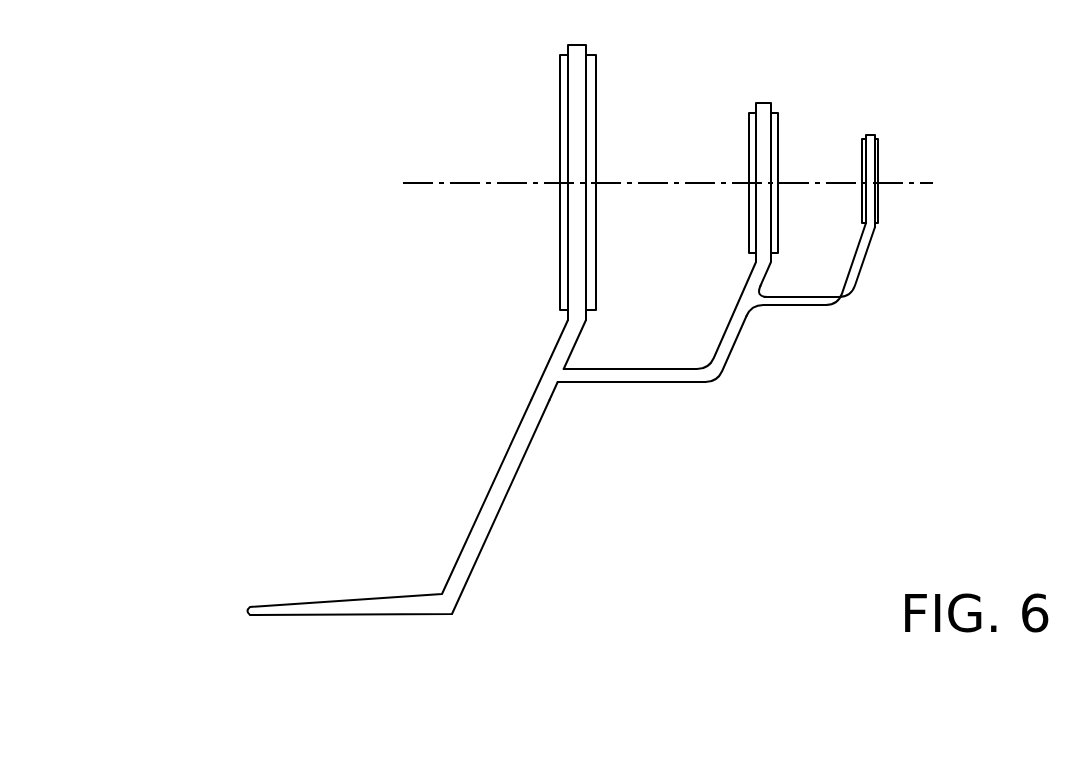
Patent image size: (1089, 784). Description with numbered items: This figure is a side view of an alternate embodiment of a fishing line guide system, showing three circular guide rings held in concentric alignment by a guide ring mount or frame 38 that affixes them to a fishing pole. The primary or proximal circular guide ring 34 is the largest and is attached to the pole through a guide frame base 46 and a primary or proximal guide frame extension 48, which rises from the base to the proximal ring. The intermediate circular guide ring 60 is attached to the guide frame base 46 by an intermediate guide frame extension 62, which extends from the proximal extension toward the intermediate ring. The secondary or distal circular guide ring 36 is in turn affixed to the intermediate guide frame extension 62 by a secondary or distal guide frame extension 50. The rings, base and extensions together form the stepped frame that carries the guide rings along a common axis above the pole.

The primary or proximal circular guide ring 34 is at (566, 103).
The secondary or distal circular guide ring 36 is at (878, 162).
The guide ring mount or frame 38 is at (318, 320).
The guide frame base 46 is at (482, 508).
The primary or proximal guide frame extension 48 is at (555, 348).
The secondary or distal guide frame extension 50 is at (805, 306).
The intermediate circular guide ring 60 is at (778, 123).
The intermediate guide frame extension 62 is at (650, 383).